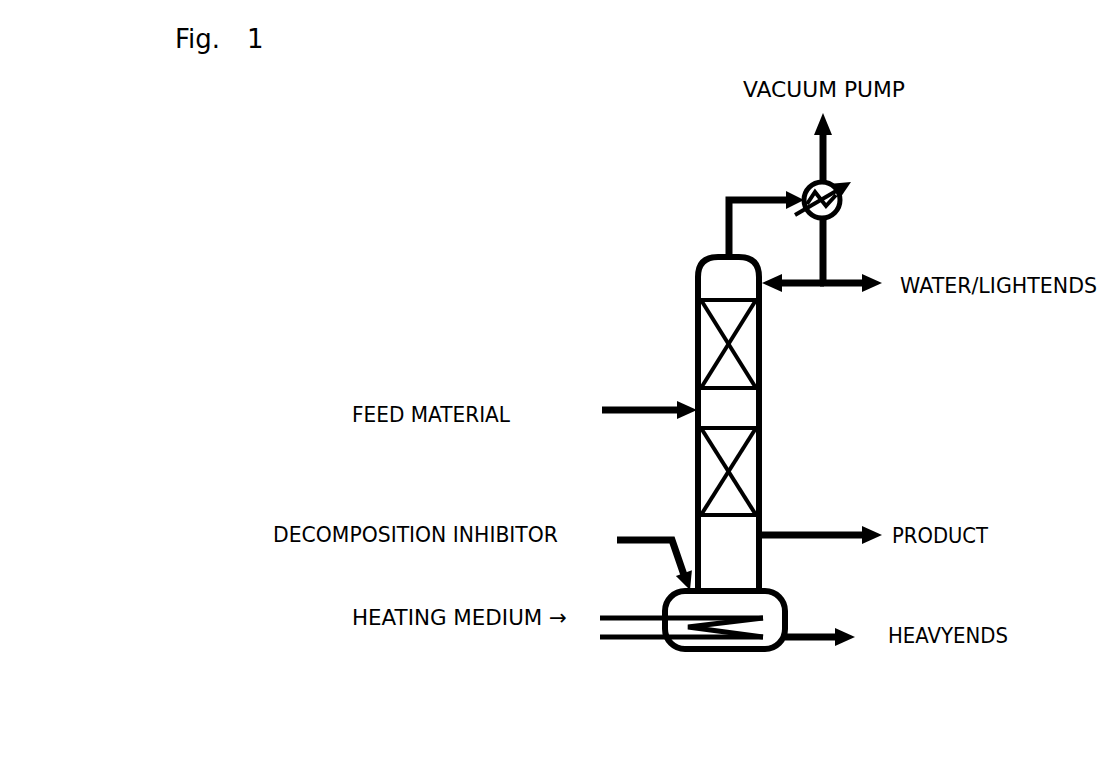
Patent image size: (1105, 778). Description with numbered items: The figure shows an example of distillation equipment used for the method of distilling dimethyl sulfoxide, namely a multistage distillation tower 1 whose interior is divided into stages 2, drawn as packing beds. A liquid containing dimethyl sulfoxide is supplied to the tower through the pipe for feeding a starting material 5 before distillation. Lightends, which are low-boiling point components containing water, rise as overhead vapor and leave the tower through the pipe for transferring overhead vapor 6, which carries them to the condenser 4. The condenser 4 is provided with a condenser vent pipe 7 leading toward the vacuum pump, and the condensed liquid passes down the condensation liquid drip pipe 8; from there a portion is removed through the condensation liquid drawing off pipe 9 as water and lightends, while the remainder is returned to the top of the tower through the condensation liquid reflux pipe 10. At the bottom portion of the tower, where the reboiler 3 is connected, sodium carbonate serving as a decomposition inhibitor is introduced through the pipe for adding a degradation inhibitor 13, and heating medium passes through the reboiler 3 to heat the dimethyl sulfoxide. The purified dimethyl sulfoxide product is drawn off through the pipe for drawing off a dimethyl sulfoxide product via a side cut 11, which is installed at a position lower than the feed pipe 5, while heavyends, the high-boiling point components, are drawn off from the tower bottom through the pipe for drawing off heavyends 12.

The distillation tower 1 is at (762, 483).
The stage 2 is at (748, 468).
The reboiler 3 is at (728, 653).
The condenser 4 is at (830, 185).
The pipe for feeding a starting material 5 is at (648, 405).
The pipe for transferring overhead vapor 6 is at (725, 218).
The condenser vent pipe 7 is at (820, 165).
The condensation liquid drip pipe 8 is at (825, 235).
The condensation liquid drawing off pipe 9 is at (843, 290).
The condensation liquid reflux pipe 10 is at (793, 290).
The pipe for drawing off a dimethyl sulfoxide product via a side cut 11 is at (813, 540).
The pipe for drawing off heavyends 12 is at (813, 640).
The pipe for adding a degradation inhibitor 13 is at (645, 535).